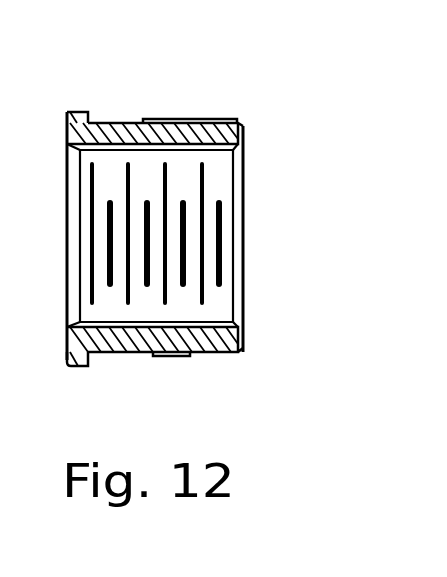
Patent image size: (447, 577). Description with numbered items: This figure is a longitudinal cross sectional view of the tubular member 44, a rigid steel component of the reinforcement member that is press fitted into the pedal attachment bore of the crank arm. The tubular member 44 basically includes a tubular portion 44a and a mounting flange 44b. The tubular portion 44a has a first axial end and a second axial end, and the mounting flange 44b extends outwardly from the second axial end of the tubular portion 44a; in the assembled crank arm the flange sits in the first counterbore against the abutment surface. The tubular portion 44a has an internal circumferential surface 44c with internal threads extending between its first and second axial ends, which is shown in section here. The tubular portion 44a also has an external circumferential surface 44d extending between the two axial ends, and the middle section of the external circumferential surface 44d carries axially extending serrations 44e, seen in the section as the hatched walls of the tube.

The tubular member 44 is at (210, 220).
The tubular portion 44a is at (210, 355).
The mounting flange 44b is at (80, 364).
The internal circumferential surface 44c is at (178, 320).
The external circumferential surface 44d is at (100, 122).
The axially extending serrations 44e is at (165, 119).